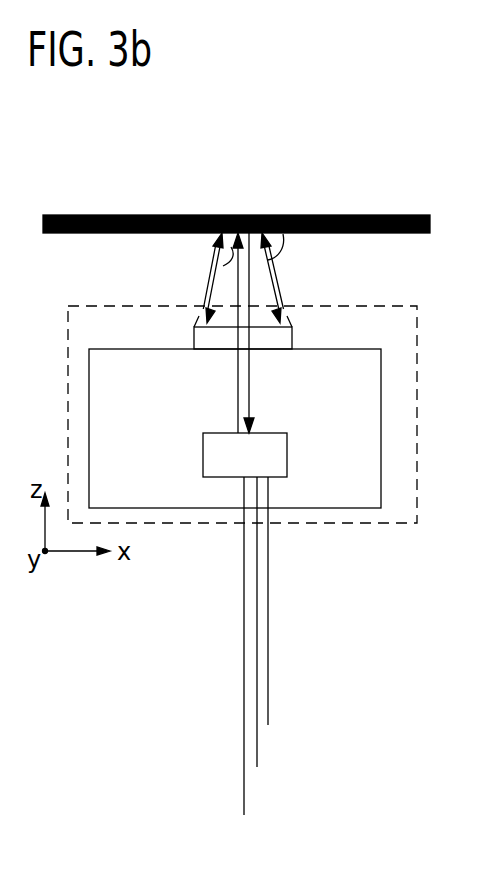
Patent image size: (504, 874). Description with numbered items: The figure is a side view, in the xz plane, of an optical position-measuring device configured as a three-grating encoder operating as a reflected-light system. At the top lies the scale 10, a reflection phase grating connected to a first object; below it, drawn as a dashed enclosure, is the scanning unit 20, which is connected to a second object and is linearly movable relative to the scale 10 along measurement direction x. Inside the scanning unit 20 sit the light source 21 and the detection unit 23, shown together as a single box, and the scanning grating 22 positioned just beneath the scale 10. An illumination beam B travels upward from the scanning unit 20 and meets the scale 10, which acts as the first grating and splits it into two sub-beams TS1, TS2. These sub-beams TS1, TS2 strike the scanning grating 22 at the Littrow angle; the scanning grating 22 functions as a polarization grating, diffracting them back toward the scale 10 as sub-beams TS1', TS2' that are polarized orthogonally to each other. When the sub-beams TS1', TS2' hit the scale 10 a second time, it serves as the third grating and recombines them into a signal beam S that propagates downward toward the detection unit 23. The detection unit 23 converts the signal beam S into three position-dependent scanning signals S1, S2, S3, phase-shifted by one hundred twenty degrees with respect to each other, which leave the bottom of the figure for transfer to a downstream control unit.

The scale 10 is at (371, 215).
The scanning unit 20 is at (343, 523).
The light source 21 is at (231, 511).
The detection unit 23 is at (223, 460).
The scanning grating 22 is at (280, 340).
The illumination beam B is at (237, 390).
The signal beam S is at (250, 375).
The first sub-beam TS1 is at (227, 211).
The second sub-beam TS2 is at (278, 208).
The first diffracted sub-beam TS1' is at (177, 278).
The second diffracted sub-beam TS2' is at (308, 278).
The first scanning signal S1 is at (281, 611).
The second scanning signal S2 is at (270, 633).
The third scanning signal S3 is at (257, 656).